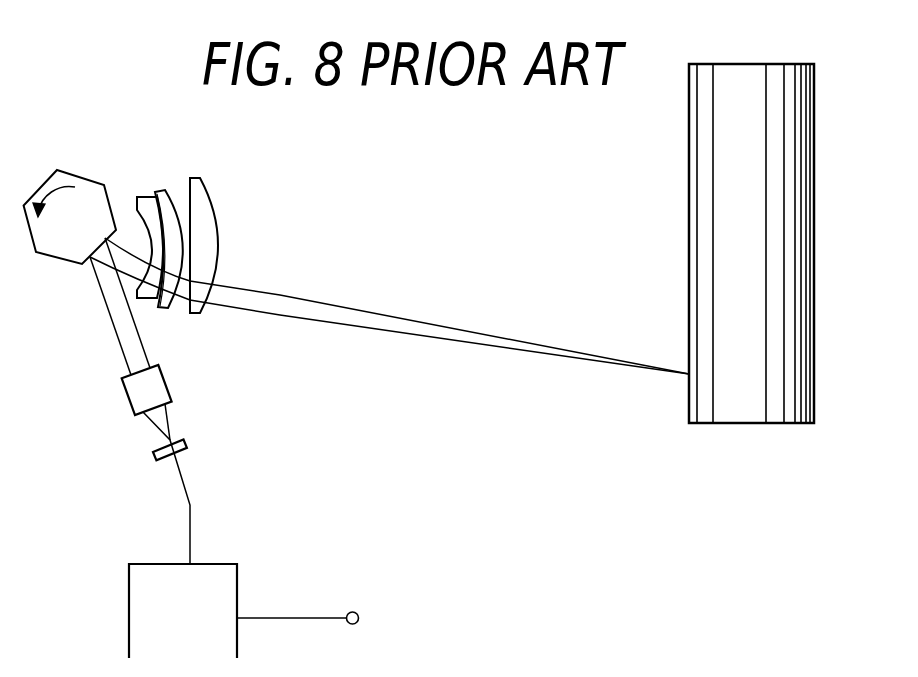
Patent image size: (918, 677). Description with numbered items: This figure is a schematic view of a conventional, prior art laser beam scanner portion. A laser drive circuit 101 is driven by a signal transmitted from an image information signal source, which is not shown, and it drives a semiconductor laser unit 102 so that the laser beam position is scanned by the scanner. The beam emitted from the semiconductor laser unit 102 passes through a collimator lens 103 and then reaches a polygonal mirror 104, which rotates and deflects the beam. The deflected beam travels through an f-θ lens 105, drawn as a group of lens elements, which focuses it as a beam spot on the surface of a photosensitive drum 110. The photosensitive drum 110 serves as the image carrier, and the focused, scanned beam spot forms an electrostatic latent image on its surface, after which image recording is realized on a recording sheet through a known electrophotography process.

The laser drive circuit 101 is at (223, 563).
The semiconductor laser unit 102 is at (188, 445).
The collimator lens 103 is at (167, 383).
The polygonal mirror 104 is at (52, 260).
The f-θ lens 105 is at (177, 181).
The photosensitive drum 110 is at (689, 135).